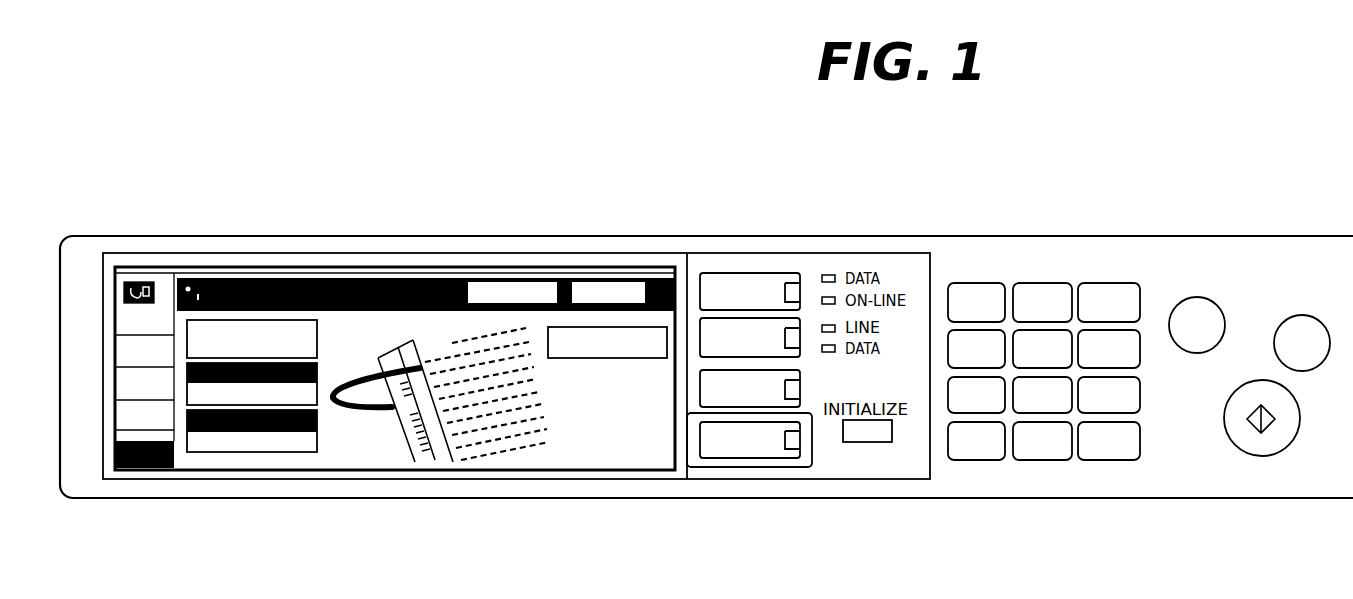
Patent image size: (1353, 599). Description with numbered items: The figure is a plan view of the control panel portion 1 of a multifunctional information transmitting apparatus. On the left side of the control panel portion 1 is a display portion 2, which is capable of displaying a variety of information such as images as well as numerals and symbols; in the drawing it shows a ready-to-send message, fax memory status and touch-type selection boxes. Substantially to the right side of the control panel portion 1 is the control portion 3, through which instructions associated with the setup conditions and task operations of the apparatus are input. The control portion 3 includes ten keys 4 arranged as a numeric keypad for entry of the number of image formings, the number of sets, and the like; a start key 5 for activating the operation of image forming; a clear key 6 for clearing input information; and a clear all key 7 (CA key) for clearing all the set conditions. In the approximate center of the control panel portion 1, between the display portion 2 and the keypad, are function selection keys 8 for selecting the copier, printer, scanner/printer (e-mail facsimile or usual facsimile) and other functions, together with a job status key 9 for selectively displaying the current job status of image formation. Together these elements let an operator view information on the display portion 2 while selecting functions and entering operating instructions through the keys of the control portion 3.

The control panel portion 1 is at (546, 233).
The display portion 2 is at (493, 480).
The control portion 3 is at (933, 250).
The ten keys 4 is at (1143, 262).
The start key 5 is at (1264, 456).
The clear key 6 is at (1184, 298).
The clear all key 7 is at (1290, 316).
The function selection keys 8 is at (697, 402).
The job status key 9 is at (757, 463).